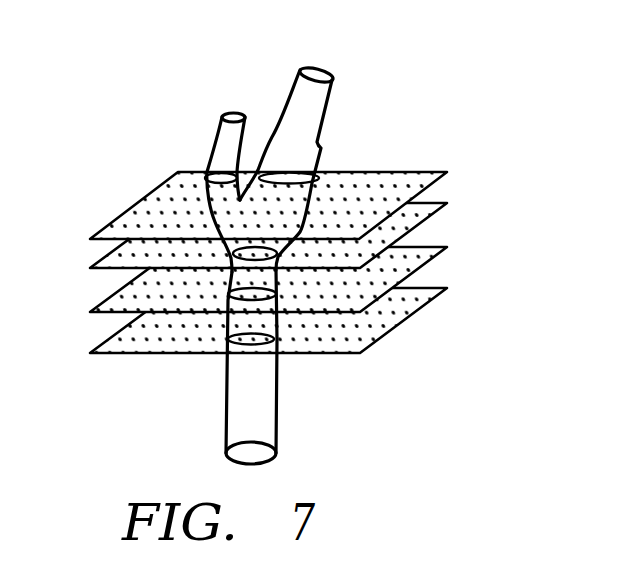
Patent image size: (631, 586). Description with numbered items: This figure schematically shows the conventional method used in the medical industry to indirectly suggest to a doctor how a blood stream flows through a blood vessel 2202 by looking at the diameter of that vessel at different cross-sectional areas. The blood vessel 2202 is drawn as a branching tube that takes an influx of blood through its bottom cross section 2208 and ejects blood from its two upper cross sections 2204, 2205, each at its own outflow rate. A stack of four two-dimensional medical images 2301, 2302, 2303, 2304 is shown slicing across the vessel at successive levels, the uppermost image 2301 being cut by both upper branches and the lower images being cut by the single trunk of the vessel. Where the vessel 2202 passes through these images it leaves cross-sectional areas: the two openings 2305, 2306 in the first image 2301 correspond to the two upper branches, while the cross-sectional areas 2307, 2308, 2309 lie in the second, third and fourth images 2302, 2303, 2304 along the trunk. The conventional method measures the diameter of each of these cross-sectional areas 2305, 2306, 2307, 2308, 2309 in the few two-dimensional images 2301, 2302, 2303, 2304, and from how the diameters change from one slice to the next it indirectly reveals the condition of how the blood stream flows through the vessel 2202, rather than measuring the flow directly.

The blood vessel 2202 is at (278, 372).
The upper cross section 2204 is at (320, 73).
The upper cross section 2205 is at (228, 112).
The bottom cross section 2208 is at (224, 452).
The 2D medical image 2301 is at (436, 172).
The 2D medical image 2302 is at (436, 203).
The 2D medical image 2303 is at (436, 247).
The 2D medical image 2304 is at (436, 288).
The cross-sectional area 2305 is at (300, 180).
The cross-sectional area 2306 is at (206, 178).
The cross-sectional area 2307 is at (233, 257).
The cross-sectional area 2308 is at (231, 296).
The cross-sectional area 2309 is at (227, 342).